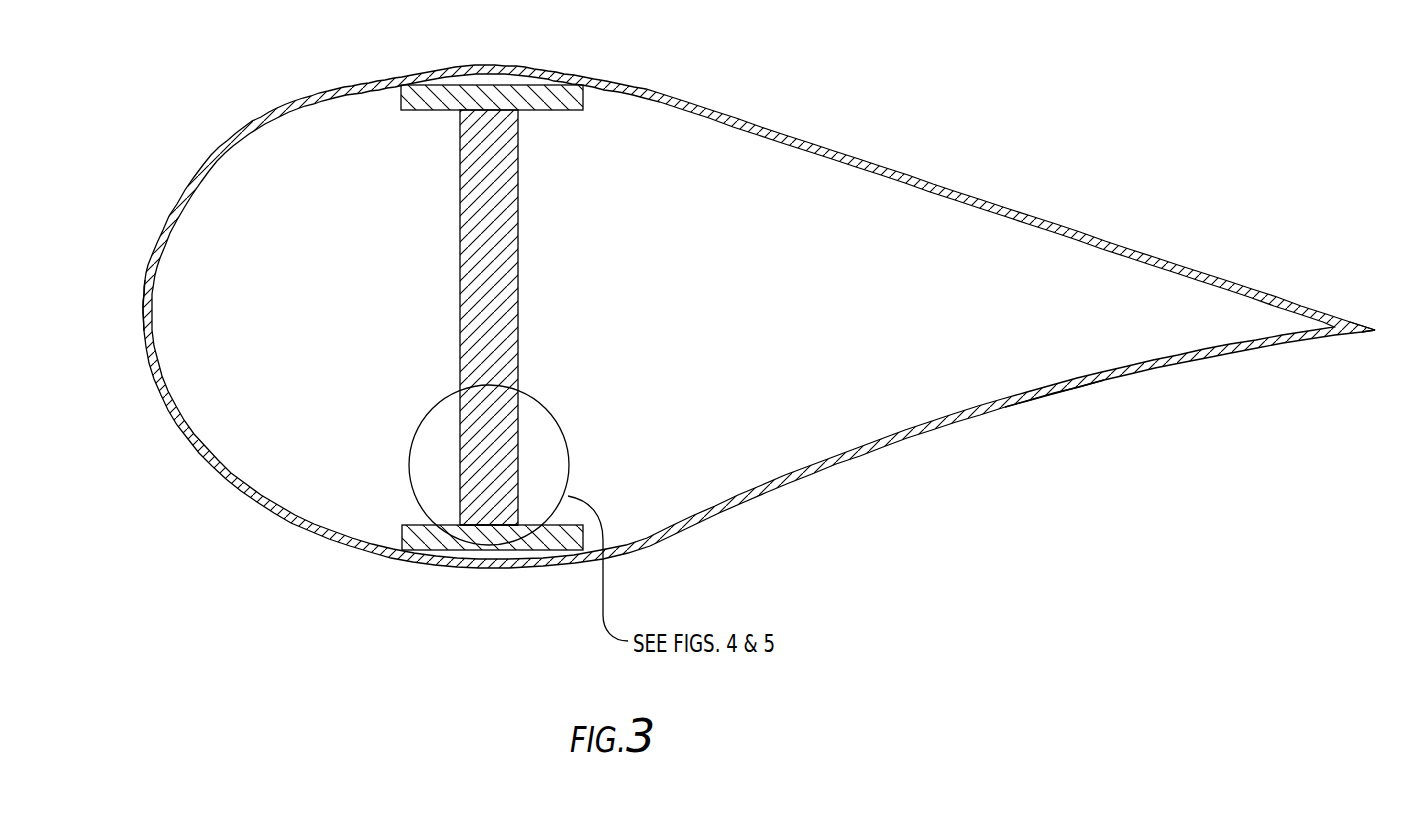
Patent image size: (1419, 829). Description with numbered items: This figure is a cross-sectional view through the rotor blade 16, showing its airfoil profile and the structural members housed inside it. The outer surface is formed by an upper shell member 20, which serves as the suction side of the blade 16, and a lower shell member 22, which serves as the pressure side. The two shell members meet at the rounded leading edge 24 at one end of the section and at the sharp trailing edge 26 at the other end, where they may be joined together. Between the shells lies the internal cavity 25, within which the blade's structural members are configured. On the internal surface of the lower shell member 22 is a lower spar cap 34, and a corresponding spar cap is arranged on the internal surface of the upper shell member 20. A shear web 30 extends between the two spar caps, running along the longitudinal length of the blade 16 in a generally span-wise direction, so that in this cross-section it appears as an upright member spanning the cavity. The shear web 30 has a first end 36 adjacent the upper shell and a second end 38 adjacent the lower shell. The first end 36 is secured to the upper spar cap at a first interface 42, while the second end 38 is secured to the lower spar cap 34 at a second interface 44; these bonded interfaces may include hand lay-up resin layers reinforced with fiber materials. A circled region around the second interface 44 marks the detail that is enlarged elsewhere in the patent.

The rotor blade 16 is at (1143, 141).
The upper shell member 20 is at (706, 108).
The lower shell member 22 is at (745, 503).
The leading edge 24 is at (143, 316).
The internal cavity 25 is at (876, 370).
The trailing edge 26 is at (1375, 330).
The shear web 30 is at (460, 224).
The lower spar cap 34 is at (405, 536).
The first end 36 is at (460, 118).
The second end 38 is at (512, 524).
The first interface 42 is at (542, 152).
The second interface 44 is at (431, 466).